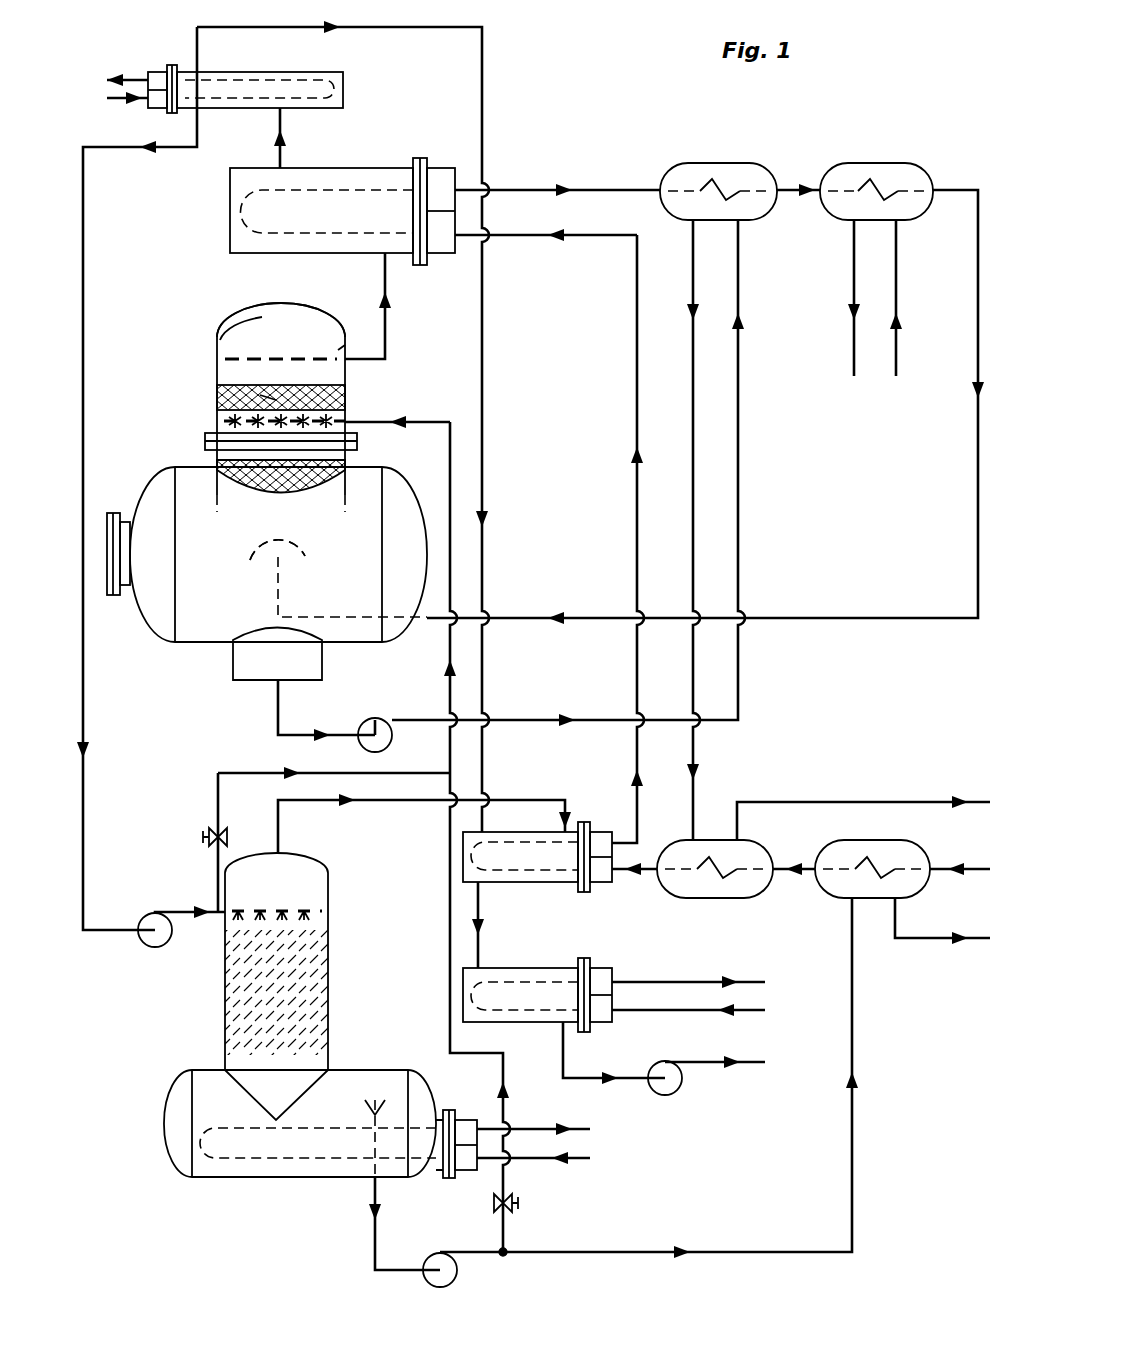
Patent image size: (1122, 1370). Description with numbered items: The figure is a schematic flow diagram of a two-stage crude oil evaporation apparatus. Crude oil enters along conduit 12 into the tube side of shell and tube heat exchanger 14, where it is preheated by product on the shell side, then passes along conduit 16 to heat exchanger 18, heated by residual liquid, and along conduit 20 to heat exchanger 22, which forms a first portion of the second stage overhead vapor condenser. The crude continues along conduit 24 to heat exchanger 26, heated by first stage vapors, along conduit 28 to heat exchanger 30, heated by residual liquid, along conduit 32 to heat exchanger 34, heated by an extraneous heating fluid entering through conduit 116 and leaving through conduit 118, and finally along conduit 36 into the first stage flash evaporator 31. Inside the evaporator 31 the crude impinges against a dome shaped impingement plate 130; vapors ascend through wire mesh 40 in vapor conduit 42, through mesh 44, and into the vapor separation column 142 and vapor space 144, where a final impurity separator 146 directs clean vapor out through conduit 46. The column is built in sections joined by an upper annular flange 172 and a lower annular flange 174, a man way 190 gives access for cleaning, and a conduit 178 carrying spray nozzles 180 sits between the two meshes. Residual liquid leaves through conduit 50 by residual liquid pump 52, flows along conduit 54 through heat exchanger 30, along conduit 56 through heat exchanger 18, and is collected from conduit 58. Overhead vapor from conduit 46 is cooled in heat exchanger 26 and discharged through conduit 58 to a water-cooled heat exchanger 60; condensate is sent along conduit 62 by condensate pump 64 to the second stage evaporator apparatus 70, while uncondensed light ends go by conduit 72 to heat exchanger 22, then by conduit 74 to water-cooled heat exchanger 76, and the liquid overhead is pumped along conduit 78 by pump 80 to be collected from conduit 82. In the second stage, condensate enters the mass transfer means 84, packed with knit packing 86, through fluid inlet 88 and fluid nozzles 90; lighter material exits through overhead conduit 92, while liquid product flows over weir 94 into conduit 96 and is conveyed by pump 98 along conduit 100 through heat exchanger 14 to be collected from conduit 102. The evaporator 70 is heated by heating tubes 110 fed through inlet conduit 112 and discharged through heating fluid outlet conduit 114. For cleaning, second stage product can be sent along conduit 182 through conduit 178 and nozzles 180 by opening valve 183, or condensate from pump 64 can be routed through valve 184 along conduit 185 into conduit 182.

The conduit 12 is at (938, 872).
The shell and tube heat exchanger 14 is at (856, 842).
The conduit 16 is at (807, 876).
The shell and tube heat exchanger 18 is at (706, 898).
The conduit 20 is at (648, 882).
The shell and tube heat exchanger 22 is at (548, 890).
The conduit 24 is at (636, 372).
The shell and tube heat exchanger 26 is at (230, 204).
The conduit 28 is at (584, 188).
The shell and tube heat exchanger 30 is at (716, 163).
The first stage flash evaporator 31 is at (196, 648).
The conduit 32 is at (784, 186).
The shell and tube heat exchanger 34 is at (862, 163).
The conduit 36 is at (596, 616).
The wire mesh 40 is at (328, 494).
The vapor conduit 42 is at (348, 420).
The mesh 44 is at (216, 396).
The conduit 46 is at (386, 338).
The conduit 50 is at (274, 718).
The residual liquid pump 52 is at (378, 751).
The conduit 54 is at (740, 492).
The conduit 56 is at (693, 492).
The conduit 58 is at (284, 152).
The water-cooled heat exchanger 60 is at (344, 86).
The conduit 62 is at (85, 294).
The condensate pump 64 is at (158, 948).
The second stage evaporator apparatus 70 is at (176, 1078).
The conduit 72 is at (486, 78).
The conduit 74 is at (480, 952).
The water-cooled heat exchanger 76 is at (552, 1024).
The conduit 78 is at (640, 1078).
The pump 80 is at (676, 1090).
The conduit 82 is at (748, 1064).
The mass transfer means 84 is at (326, 858).
The knit packing 86 is at (328, 972).
The fluid inlet 88 is at (216, 892).
The fluid nozzles 90 is at (328, 916).
The overhead conduit 92 is at (276, 808).
The weir 94 is at (380, 1100).
The conduit 96 is at (368, 1250).
The pump 98 is at (440, 1284).
The conduit 100 is at (752, 1256).
The conduit 102 is at (906, 942).
The heating tubes 110 is at (290, 1178).
The inlet conduit 112 is at (582, 1162).
The heating fluid outlet conduit 114 is at (582, 1126).
The conduit 116 is at (898, 348).
The conduit 118 is at (852, 348).
The dome shaped impingement plate 130 is at (254, 542).
The vapor separation column 142 is at (282, 304).
The vapor space 144 is at (242, 346).
The final impurity separator 146 is at (316, 352).
The upper annular flange 172 is at (354, 442).
The lower annular flange 174 is at (205, 444).
The conduit 178 is at (218, 422).
The spray nozzles 180 is at (270, 398).
The conduit 182 is at (448, 890).
The valve 183 is at (514, 1216).
The valve 184 is at (206, 850).
The conduit 185 is at (218, 776).
The man way 190 is at (106, 596).